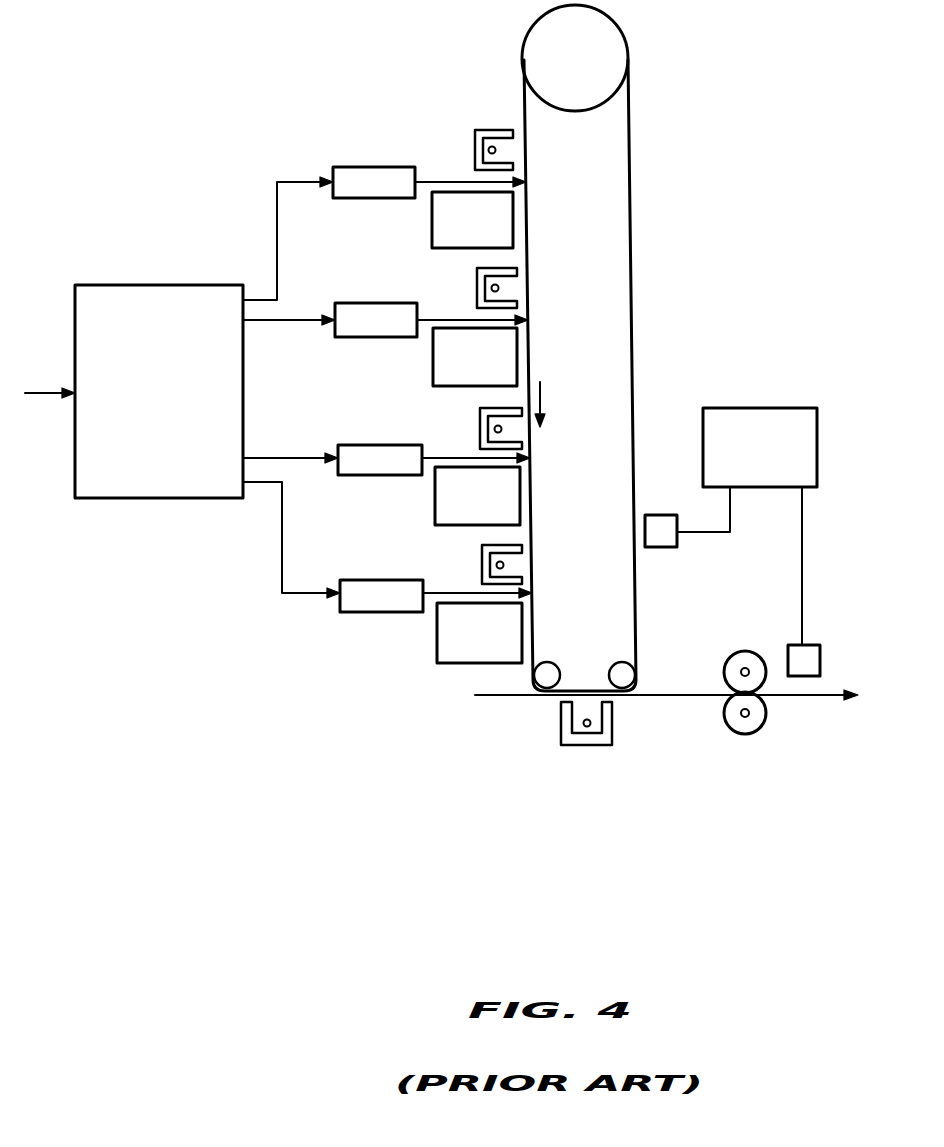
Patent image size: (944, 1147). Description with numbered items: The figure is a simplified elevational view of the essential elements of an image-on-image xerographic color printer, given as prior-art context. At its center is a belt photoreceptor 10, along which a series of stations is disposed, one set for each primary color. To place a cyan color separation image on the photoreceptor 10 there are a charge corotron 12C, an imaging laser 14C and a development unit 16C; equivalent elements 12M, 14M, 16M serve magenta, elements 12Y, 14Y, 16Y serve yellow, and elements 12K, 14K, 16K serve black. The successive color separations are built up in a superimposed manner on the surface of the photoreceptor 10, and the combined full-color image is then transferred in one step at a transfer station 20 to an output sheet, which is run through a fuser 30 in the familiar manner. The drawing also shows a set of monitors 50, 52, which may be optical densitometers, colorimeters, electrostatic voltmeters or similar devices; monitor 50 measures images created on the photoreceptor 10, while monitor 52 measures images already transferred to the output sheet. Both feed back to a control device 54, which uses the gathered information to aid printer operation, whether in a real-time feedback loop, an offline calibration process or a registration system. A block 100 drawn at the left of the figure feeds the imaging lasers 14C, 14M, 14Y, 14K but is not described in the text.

The belt photoreceptor 10 is at (631, 278).
The charge corotron 12C is at (498, 130).
The charge corotron 12M is at (477, 295).
The charge corotron 12Y is at (480, 432).
The charge corotron 12K is at (483, 572).
The imaging laser 14C is at (385, 167).
The imaging laser 14M is at (340, 303).
The imaging laser 14Y is at (342, 445).
The imaging laser 14K is at (345, 580).
The development unit 16C is at (432, 236).
The development unit 16M is at (433, 376).
The development unit 16Y is at (435, 513).
The development unit 16K is at (437, 651).
The transfer station 20 is at (627, 710).
The fuser 30 is at (736, 648).
The monitor 50 is at (660, 547).
The monitor 52 is at (805, 645).
The control device 54 is at (740, 408).
The image processor 100 is at (128, 285).